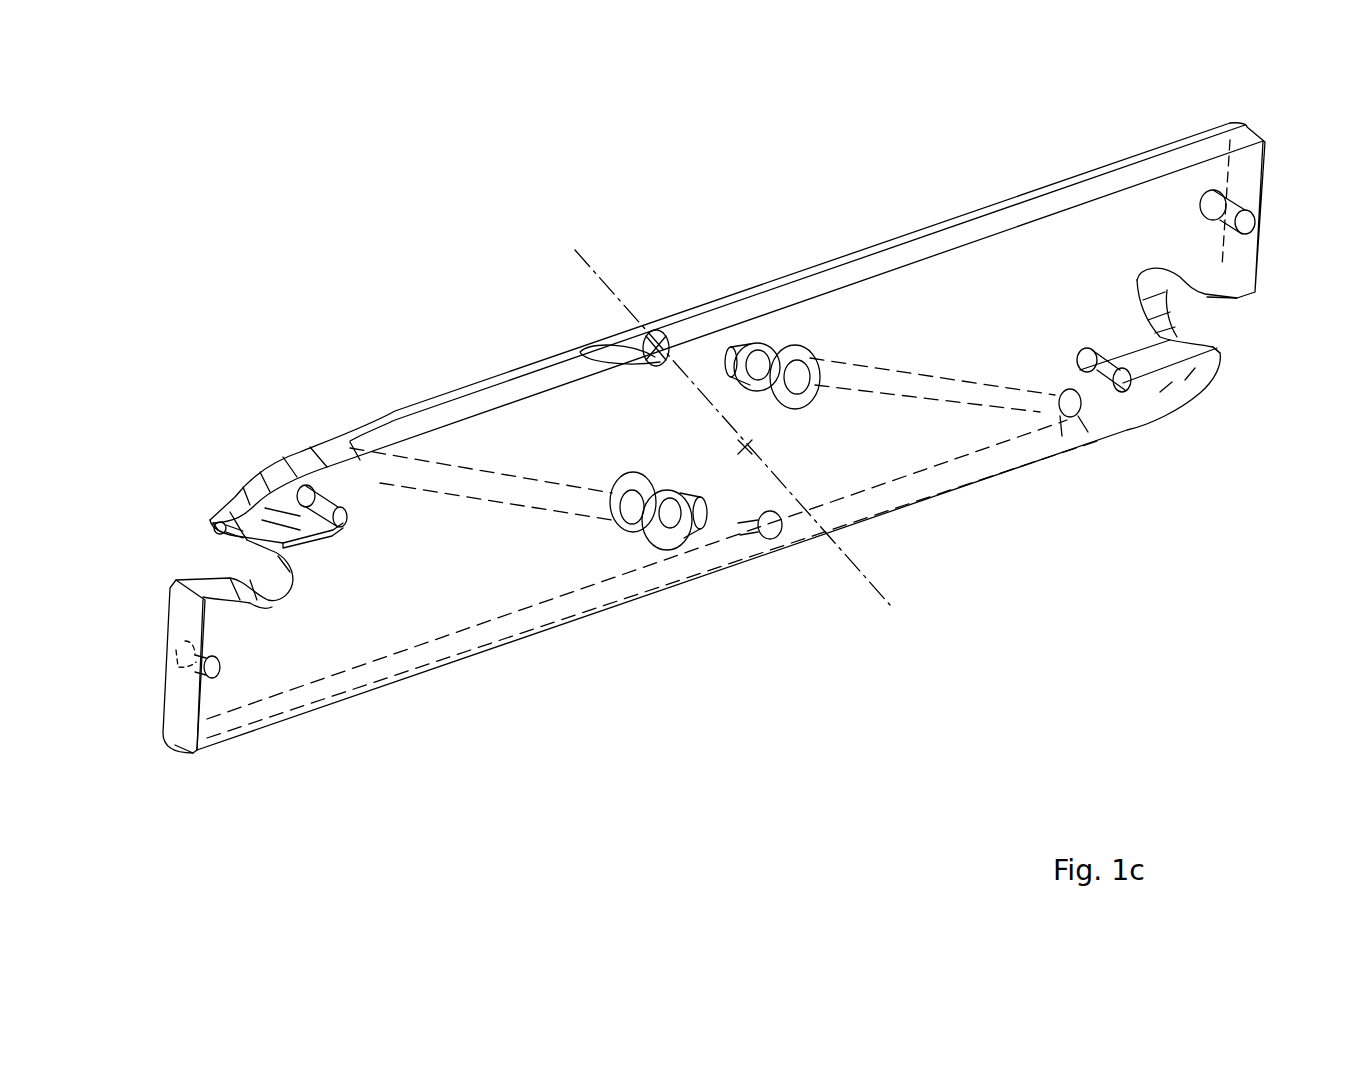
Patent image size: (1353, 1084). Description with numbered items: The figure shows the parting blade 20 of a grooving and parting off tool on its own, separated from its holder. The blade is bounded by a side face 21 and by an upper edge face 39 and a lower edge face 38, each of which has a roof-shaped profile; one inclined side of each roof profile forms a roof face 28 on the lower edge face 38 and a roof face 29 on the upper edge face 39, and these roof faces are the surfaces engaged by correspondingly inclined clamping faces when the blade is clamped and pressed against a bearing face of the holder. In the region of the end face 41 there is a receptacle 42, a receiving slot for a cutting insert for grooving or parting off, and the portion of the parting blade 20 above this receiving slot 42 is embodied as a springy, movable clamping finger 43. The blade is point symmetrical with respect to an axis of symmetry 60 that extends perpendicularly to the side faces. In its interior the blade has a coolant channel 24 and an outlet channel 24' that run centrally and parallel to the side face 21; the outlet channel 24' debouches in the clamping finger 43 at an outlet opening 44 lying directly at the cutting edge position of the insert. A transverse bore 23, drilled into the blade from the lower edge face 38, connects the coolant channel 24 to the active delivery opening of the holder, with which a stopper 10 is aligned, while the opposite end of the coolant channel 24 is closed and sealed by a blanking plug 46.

The parting blade 20 is at (443, 302).
The upper edge face 39 is at (510, 378).
The roof face 29 is at (437, 420).
The outlet channel 24' is at (306, 437).
The clamping finger 43 is at (273, 533).
The outlet opening 44 is at (233, 537).
The receptacle 42 is at (235, 565).
The end face 41 is at (185, 692).
The lower edge face 38 is at (210, 743).
The side face 21 is at (433, 567).
The roof face 28 is at (338, 704).
The coolant channel 24 is at (481, 600).
The stopper 10 is at (683, 535).
The transverse bore 23 is at (632, 537).
The blanking plug 46 is at (740, 530).
The axis of symmetry 60 is at (900, 605).